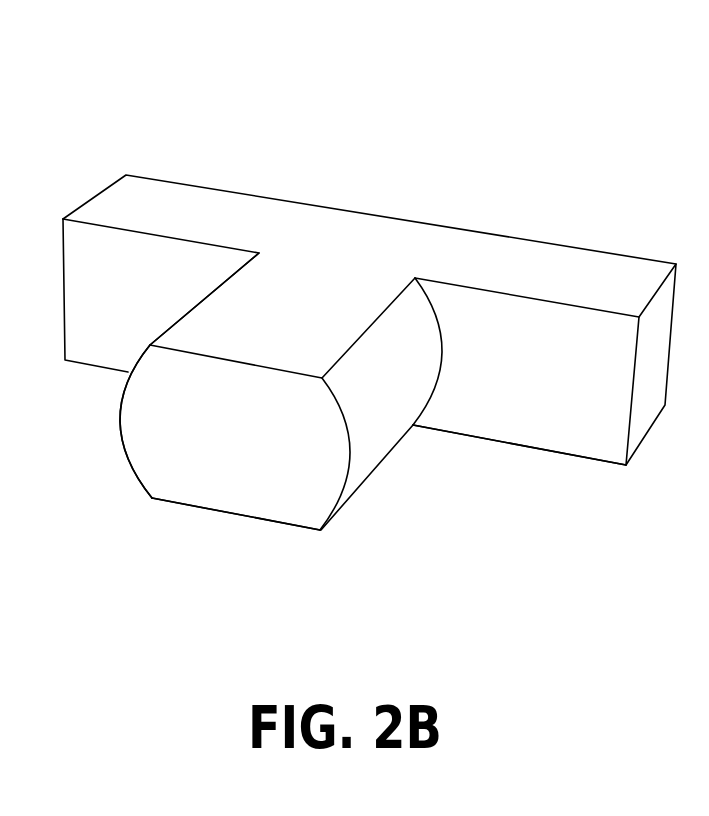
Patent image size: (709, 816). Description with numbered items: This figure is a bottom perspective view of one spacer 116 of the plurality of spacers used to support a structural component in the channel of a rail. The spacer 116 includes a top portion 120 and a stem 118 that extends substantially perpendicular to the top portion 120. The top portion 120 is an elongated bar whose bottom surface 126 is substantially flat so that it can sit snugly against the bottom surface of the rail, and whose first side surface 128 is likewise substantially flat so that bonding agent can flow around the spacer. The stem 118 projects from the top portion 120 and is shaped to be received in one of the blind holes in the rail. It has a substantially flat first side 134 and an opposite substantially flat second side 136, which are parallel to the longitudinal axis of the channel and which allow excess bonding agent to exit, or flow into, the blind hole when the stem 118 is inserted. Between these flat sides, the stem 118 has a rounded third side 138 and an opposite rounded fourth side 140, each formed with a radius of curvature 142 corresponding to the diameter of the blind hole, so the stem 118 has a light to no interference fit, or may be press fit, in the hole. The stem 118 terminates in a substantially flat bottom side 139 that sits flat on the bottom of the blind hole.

The spacer 116 is at (497, 109).
The top portion 120 is at (592, 222).
The first side surface 128 is at (172, 200).
The bottom surface 126 is at (552, 442).
The stem 118 is at (346, 535).
The first side 134 is at (303, 302).
The third side 138 is at (122, 400).
The radius of curvature 142 is at (140, 442).
The bottom side 139 is at (200, 488).
The second side 136 is at (245, 518).
The fourth side 140 is at (387, 427).